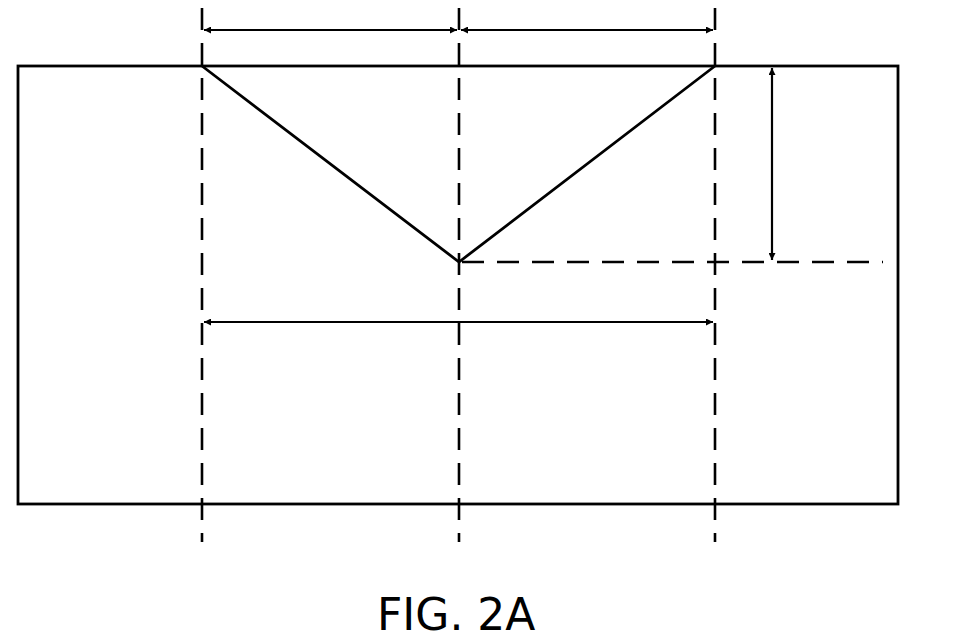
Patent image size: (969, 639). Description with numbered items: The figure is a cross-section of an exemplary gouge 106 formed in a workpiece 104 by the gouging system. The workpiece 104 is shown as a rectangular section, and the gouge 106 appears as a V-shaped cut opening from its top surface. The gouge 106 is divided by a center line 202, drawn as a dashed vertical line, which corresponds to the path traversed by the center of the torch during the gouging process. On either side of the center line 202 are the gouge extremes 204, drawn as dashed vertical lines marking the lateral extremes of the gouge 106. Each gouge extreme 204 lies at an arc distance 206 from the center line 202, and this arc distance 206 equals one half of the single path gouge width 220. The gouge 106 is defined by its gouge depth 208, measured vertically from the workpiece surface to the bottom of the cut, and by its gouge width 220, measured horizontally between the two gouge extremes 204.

The workpiece 104 is at (745, 505).
The gouge 106 is at (392, 210).
The center line 202 is at (457, 457).
The gouge extremes 204 is at (201, 457).
The arc distance 206 is at (310, 32).
The gouge depth 208 is at (773, 183).
The gouge width 220 is at (482, 323).